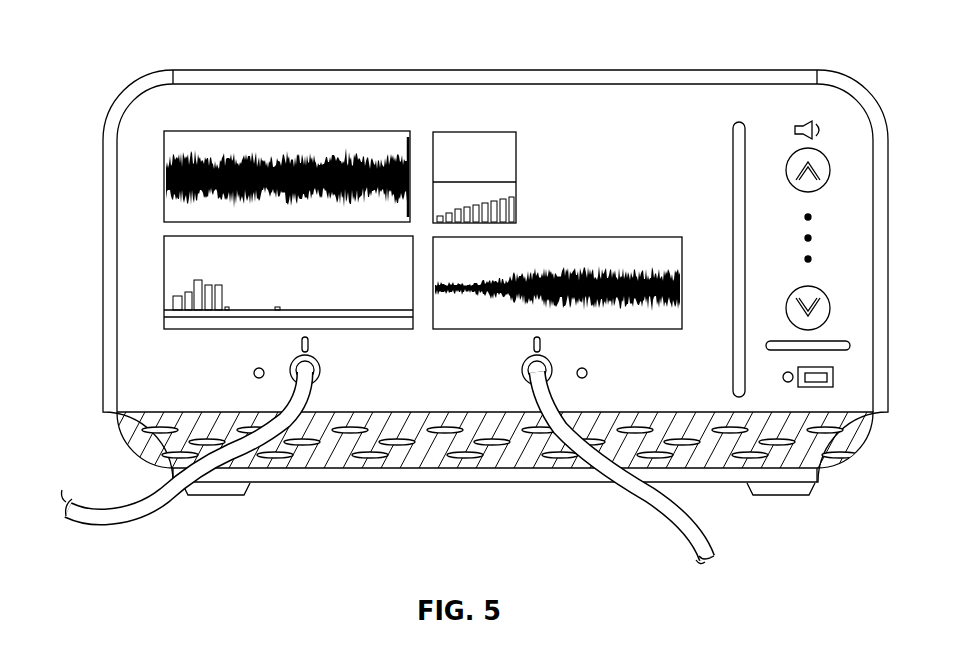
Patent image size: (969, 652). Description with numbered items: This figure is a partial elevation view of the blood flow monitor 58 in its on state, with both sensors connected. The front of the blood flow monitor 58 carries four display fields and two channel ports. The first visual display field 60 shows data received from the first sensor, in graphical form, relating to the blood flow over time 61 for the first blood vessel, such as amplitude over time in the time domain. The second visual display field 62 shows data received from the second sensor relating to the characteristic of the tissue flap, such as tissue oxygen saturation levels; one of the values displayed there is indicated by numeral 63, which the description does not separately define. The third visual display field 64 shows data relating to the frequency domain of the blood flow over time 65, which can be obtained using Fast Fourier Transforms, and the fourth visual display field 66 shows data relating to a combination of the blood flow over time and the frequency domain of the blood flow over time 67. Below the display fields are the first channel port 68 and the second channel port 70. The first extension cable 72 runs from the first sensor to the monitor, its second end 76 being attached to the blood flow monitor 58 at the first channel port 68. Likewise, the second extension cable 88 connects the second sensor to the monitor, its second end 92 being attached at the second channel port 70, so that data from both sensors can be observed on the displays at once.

The blood flow monitor 58 is at (706, 54).
The first visual display field 60 is at (243, 125).
The blood flow over time 61 is at (192, 150).
The second visual display field 62 is at (500, 125).
The numeric value indicator 63 is at (500, 170).
The third visual display field 64 is at (203, 336).
The frequency domain of the blood flow over time 65 is at (177, 306).
The fourth visual display field 66 is at (600, 228).
The combination of the blood flow over time and the frequency domain of the blood fl 67 is at (630, 270).
The first channel port 68 is at (323, 375).
The second channel port 70 is at (556, 368).
The first extension cable 72 is at (145, 526).
The second end 76 is at (296, 372).
The second extension cable 88 is at (674, 508).
The second end 92 is at (528, 370).